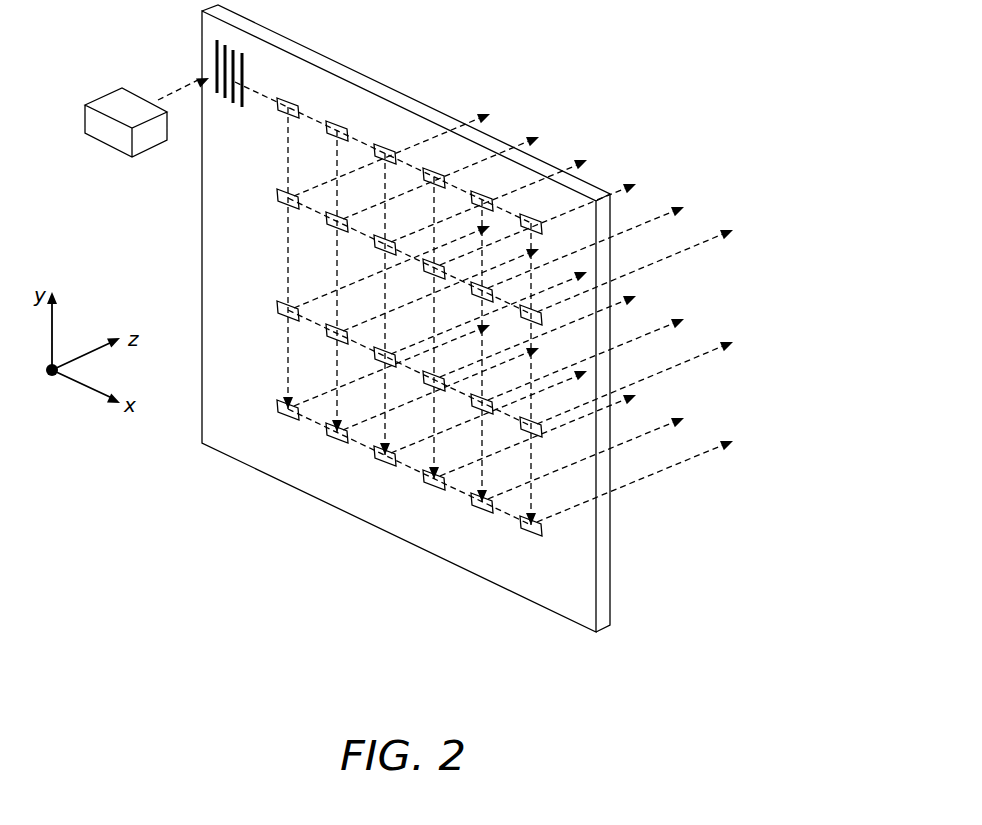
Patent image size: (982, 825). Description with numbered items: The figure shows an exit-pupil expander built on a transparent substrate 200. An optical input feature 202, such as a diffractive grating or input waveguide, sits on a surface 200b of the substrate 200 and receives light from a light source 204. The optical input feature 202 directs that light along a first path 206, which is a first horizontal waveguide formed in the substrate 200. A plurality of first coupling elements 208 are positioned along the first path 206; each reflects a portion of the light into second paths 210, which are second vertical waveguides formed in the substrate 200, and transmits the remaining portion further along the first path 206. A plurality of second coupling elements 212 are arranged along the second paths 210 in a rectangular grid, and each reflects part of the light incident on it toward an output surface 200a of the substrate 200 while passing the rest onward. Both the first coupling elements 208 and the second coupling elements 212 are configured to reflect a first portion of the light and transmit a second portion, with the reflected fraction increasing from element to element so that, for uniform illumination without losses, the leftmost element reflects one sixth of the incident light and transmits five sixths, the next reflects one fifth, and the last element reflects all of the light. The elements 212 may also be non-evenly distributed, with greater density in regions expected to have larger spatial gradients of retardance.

The transparent substrate 200 is at (446, 324).
The output surface 200a is at (611, 593).
The surface 200b is at (548, 582).
The optical input feature 202 is at (213, 56).
The light source 204 is at (85, 118).
The first path 206 is at (361, 140).
The first coupling elements 208 is at (333, 123).
The second paths 210 is at (336, 404).
The second coupling elements 212 is at (276, 307).